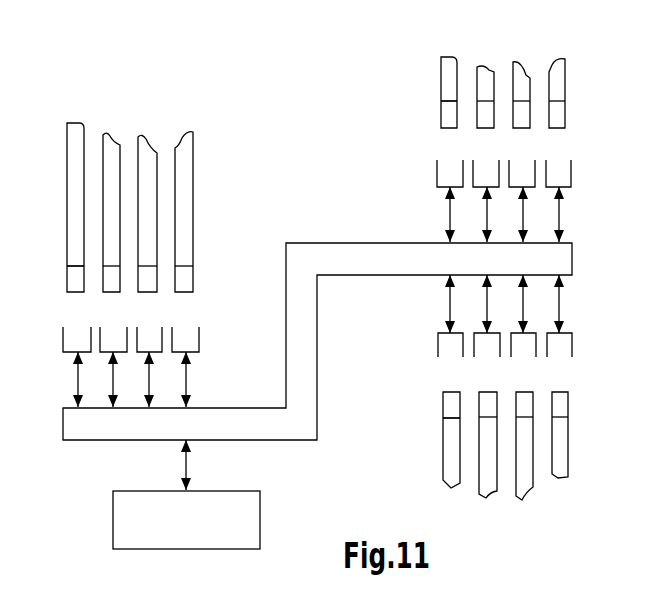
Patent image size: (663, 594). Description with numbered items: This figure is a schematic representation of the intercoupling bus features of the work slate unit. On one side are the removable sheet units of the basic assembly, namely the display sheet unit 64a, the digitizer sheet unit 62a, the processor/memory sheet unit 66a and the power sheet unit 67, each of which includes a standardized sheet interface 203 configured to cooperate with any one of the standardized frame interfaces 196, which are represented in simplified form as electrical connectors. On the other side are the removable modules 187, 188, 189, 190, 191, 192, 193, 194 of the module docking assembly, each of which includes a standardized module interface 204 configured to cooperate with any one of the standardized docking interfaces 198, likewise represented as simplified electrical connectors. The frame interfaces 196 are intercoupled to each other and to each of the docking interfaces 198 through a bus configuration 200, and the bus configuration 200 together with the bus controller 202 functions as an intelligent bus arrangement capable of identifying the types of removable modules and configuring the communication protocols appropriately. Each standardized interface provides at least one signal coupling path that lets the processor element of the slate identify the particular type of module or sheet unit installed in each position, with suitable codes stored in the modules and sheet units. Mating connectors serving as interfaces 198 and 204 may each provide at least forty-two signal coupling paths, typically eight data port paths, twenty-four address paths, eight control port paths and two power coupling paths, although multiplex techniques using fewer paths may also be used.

The digitizer sheet unit 62a is at (110, 135).
The display sheet unit 64a is at (77, 123).
The processor/memory sheet unit 66a is at (143, 137).
The power sheet unit 67 is at (183, 133).
The removable module 187 is at (441, 73).
The removable module 188 is at (478, 67).
The removable module 189 is at (515, 63).
The removable module 190 is at (565, 82).
The removable module 191 is at (443, 448).
The removable module 192 is at (489, 497).
The removable module 193 is at (523, 498).
The removable module 194 is at (558, 473).
The standardized frame interface 196 is at (64, 338).
The standardized docking interface 198 is at (572, 175).
The bus configuration 200 is at (387, 243).
The bus controller 202 is at (260, 535).
The standardized sheet interface 203 is at (67, 280).
The standardized module interface 204 is at (441, 117).